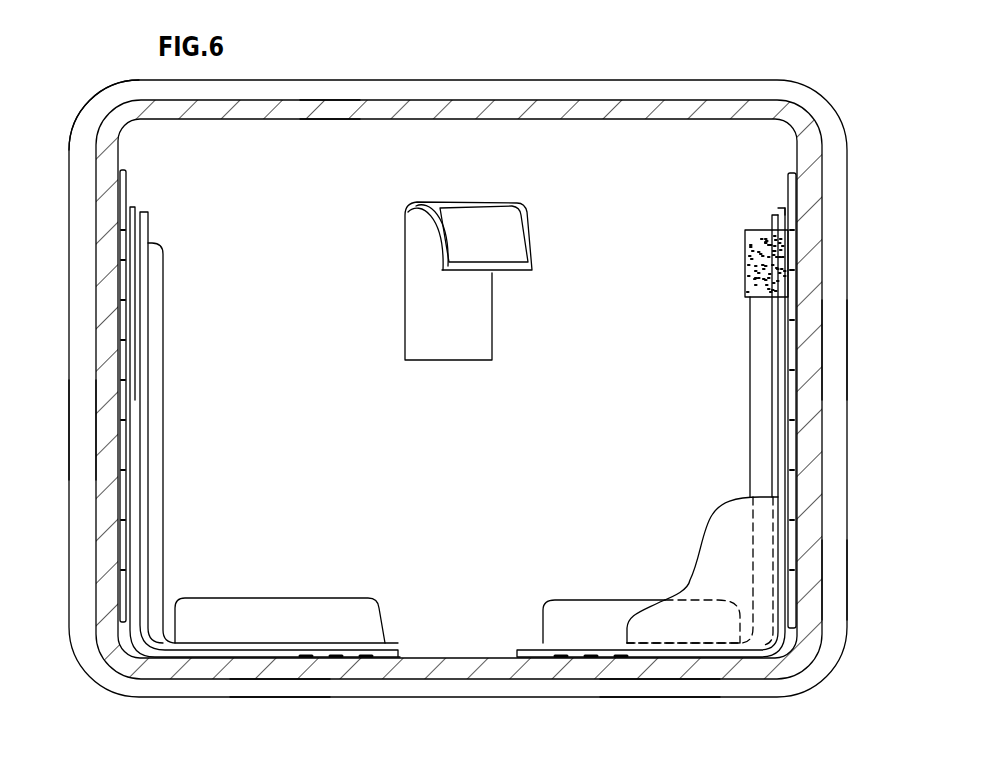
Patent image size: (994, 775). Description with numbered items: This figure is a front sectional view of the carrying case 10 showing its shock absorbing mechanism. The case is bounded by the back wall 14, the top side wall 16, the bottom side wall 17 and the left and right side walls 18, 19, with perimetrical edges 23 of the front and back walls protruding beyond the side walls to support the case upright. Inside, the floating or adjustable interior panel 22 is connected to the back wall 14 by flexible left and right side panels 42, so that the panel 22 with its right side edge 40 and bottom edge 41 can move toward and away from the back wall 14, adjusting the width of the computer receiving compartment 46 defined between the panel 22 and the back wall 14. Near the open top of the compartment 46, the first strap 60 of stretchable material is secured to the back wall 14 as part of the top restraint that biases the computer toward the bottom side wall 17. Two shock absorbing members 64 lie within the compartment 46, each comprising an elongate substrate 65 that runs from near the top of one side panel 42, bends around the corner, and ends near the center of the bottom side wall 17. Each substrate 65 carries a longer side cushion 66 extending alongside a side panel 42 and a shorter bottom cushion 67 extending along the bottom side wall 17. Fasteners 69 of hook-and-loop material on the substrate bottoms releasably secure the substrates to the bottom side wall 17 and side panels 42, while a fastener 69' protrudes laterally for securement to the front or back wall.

The carrying case 10 is at (452, 371).
The back wall 14 is at (336, 143).
The top side wall 16 is at (436, 99).
The bottom side wall 17 is at (262, 680).
The left side wall 18 is at (95, 431).
The right side wall 19 is at (826, 347).
The floating or adjustable interior panel 22 is at (708, 512).
The perimetrical edges 23 is at (87, 104).
The right side edge 40 is at (800, 578).
The bottom edge 41 is at (668, 668).
The side panels 42 is at (121, 195).
The computer receiving compartment 46 is at (626, 125).
The first strap 60 is at (405, 300).
The shock absorbing members 64 is at (167, 450).
The elongate substrate 65 is at (134, 275).
The side cushions 66 is at (153, 382).
The bottom cushions 67 is at (305, 605).
The fasteners 69 is at (376, 467).
The fastener 69' is at (811, 258).